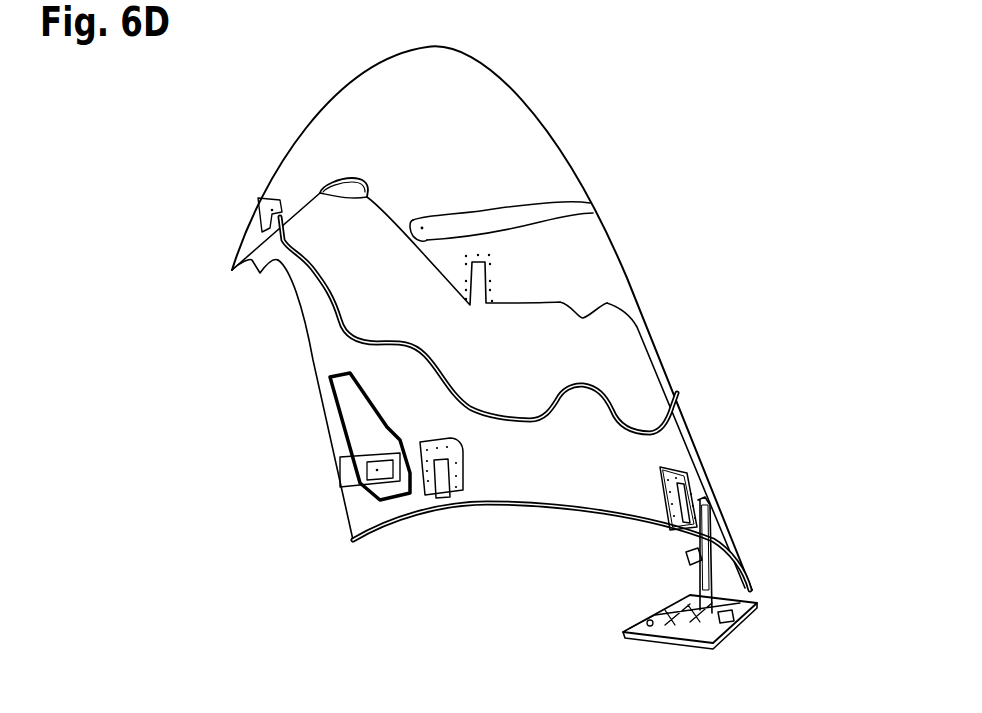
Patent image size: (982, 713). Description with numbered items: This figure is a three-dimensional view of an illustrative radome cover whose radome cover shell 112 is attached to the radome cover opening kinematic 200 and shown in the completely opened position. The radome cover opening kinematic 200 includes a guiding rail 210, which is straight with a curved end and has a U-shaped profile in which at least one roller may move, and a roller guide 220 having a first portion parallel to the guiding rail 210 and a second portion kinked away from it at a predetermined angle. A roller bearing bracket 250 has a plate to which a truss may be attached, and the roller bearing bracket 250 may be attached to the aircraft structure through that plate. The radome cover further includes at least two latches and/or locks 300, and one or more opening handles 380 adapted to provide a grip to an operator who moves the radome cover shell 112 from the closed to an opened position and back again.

The radome cover shell 112 is at (487, 93).
The opening handle 380 is at (325, 192).
The latches and/or locks 300 is at (467, 467).
The roller guide 220 is at (690, 553).
The guiding rail 210 is at (707, 578).
The radome cover opening kinematic 200 is at (766, 612).
The roller bearing bracket 250 is at (733, 620).